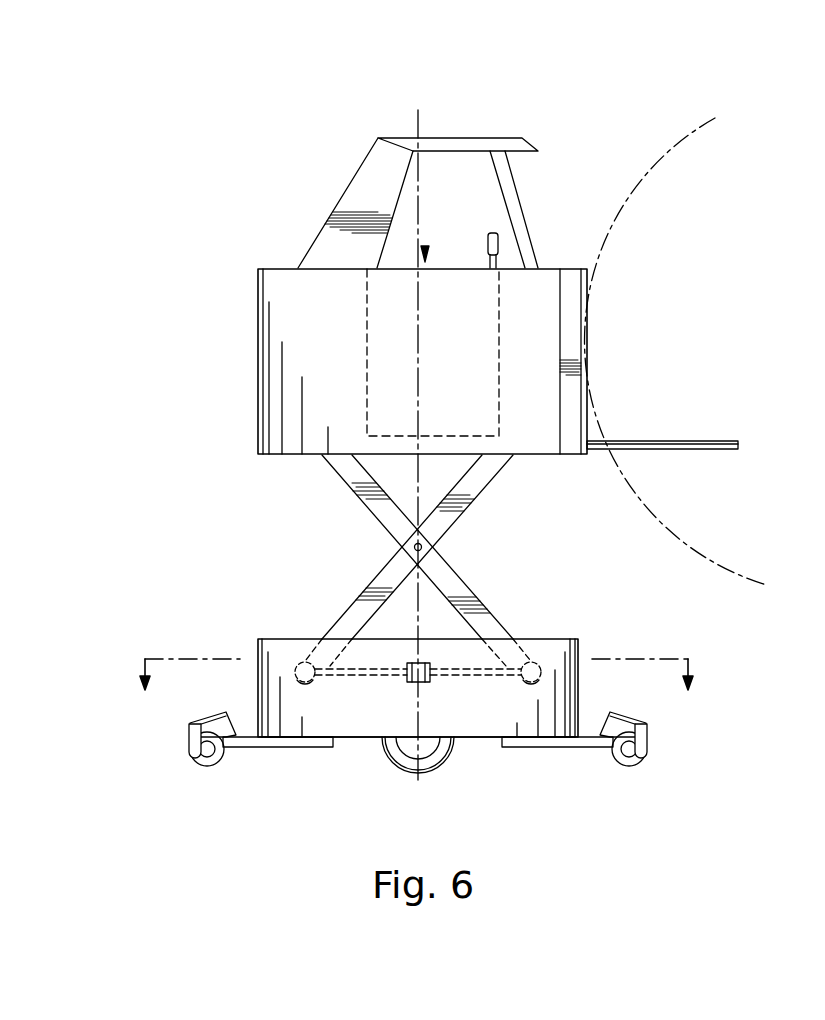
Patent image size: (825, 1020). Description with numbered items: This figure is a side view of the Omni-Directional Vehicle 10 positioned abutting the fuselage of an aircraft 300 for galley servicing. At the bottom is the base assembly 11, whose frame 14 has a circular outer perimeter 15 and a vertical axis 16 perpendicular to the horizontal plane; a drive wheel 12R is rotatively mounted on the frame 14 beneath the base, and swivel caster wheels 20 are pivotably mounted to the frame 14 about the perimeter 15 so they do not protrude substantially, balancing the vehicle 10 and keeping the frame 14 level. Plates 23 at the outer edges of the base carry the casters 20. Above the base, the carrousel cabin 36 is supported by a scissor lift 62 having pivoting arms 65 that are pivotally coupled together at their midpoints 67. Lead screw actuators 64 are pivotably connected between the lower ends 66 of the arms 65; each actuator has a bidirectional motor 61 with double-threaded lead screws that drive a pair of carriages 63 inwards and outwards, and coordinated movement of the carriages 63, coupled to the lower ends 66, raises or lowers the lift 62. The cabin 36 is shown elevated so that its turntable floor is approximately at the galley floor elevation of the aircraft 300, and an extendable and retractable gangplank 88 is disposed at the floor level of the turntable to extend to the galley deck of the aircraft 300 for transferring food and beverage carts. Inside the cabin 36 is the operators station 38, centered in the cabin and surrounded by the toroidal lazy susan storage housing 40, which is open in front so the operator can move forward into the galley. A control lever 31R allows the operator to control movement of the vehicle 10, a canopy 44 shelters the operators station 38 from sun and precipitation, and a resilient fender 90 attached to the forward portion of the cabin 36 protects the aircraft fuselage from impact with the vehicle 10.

The Omni-Directional Vehicle 10 is at (672, 797).
The base assembly 11 is at (265, 640).
The drive wheel 12R is at (421, 790).
The frame 14 is at (478, 730).
The outer perimeter 15 is at (278, 676).
The vertical axis 16 is at (420, 127).
The swivel caster wheel 20 is at (200, 756).
The caster mounting plate 23 is at (247, 748).
The control lever 31R is at (493, 234).
The carrousel cabin 36 is at (257, 335).
The operators station 38 is at (425, 250).
The lazy susan storage housing 40 is at (257, 375).
The canopy 44 is at (367, 157).
The bidirectional motor 61 is at (420, 683).
The scissor lift 62 is at (497, 482).
The carriage 63 is at (306, 662).
The lead screw actuator 64 is at (340, 678).
The scissor arm 65 is at (342, 478).
The lower end 66 is at (303, 683).
The midpoint 67 is at (424, 545).
The gangplank 88 is at (687, 441).
The resilient fender 90 is at (573, 308).
The aircraft 300 is at (713, 560).